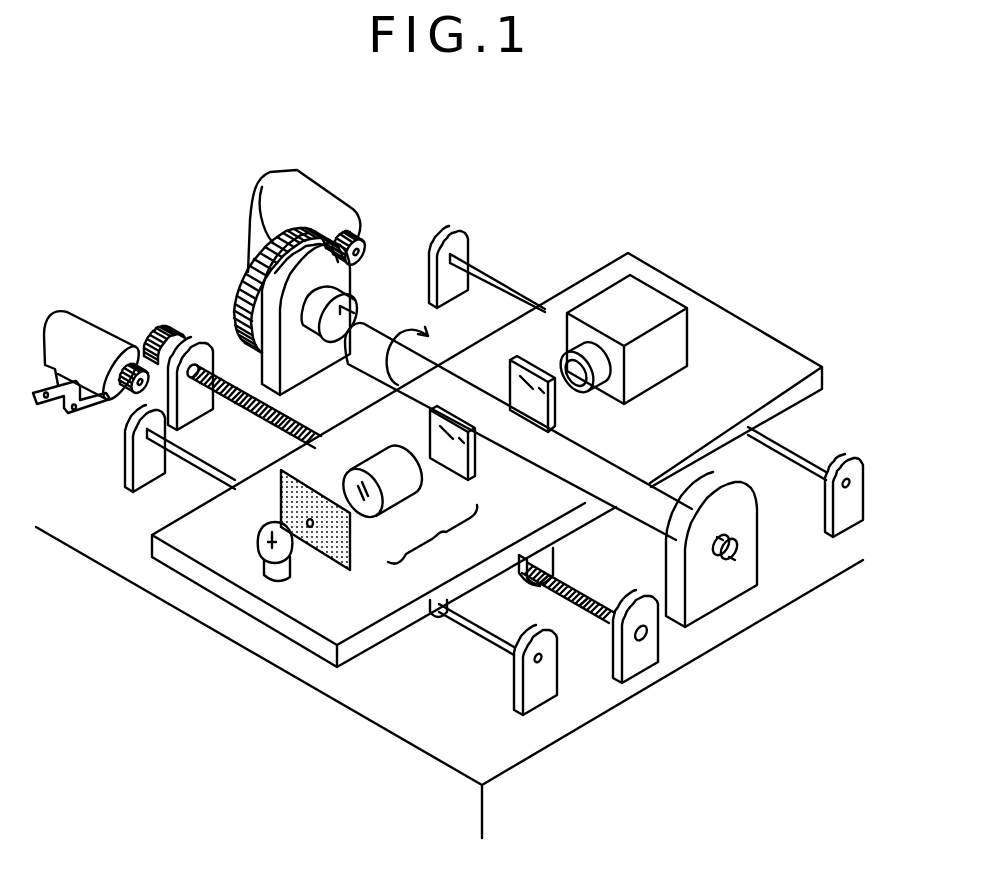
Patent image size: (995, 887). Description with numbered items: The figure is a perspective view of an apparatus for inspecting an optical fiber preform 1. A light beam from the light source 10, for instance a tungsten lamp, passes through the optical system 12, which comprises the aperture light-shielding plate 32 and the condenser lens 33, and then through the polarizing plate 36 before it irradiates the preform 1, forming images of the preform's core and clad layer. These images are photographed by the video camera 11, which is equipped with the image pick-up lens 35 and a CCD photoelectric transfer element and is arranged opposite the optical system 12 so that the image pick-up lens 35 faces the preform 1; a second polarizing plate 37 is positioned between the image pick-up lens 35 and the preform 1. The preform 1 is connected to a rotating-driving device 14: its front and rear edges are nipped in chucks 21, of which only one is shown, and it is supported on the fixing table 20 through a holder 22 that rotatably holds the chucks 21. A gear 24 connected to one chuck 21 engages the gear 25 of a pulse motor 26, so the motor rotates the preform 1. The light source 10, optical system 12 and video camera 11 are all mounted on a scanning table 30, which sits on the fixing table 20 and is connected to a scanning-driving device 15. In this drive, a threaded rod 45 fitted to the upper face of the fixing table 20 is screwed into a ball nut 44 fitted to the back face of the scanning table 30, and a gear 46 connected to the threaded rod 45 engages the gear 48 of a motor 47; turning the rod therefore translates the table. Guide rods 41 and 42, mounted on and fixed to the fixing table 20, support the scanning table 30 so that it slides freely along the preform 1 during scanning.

The optical fiber preform 1 is at (650, 505).
The light source 10 is at (258, 542).
The video camera 11 is at (648, 303).
The optical system 12 is at (432, 544).
The rotating-driving device 14 is at (246, 251).
The scanning-driving device 15 is at (139, 329).
The fixing table 20 is at (723, 617).
The chuck 21 is at (322, 298).
The holder 22 is at (727, 490).
The gear 24 is at (270, 257).
The gear 25 is at (360, 233).
The pulse motor 26 is at (306, 196).
The scanning table 30 is at (752, 357).
The aperture light-shielding plate 32 is at (323, 520).
The condenser lens 33 is at (393, 483).
The image pick-up lens 35 is at (573, 372).
The polarizing plate 36 is at (463, 460).
The polarizing plate 37 is at (507, 380).
The guide rod 41 is at (793, 457).
The guide rod 42 is at (470, 622).
The ball nut 44 is at (508, 573).
The threaded rod 45 is at (593, 620).
The gear 46 is at (180, 340).
The motor 47 is at (80, 333).
The gear 48 is at (110, 400).